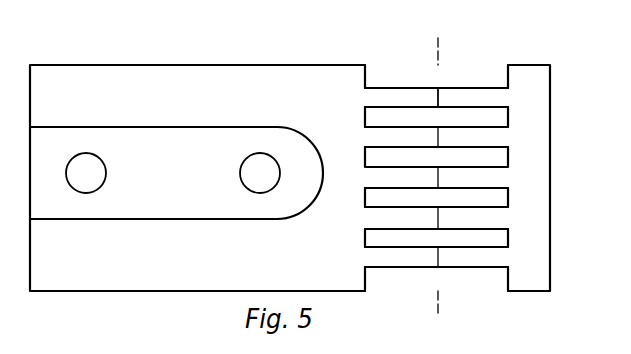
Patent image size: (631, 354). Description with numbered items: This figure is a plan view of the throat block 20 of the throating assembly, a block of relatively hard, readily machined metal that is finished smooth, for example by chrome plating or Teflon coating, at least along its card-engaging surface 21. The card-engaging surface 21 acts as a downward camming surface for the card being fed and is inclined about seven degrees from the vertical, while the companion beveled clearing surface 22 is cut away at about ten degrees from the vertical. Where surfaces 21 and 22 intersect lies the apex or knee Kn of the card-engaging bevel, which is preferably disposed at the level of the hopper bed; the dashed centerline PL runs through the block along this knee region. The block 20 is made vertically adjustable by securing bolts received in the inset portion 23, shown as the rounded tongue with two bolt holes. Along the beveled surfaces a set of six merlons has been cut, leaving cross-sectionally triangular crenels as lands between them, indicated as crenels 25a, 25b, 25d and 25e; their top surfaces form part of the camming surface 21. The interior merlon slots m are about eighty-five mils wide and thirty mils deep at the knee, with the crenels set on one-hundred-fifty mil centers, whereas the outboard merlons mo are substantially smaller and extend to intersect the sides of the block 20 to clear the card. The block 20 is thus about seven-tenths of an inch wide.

The throat block 20 is at (313, 185).
The card-engaging cam surface 21 is at (217, 104).
The beveled clearing surface 22 is at (537, 181).
The inset portion 23 is at (190, 176).
The crenel land 25a is at (507, 95).
The crenel land 25b is at (507, 134).
The crenel land 25d is at (507, 214).
The crenel land 25e is at (507, 253).
The outboard merlon mo is at (372, 77).
The merlon slot m is at (370, 199).
The knee Kn is at (440, 100).
The plane / line of symmetry PL is at (436, 185).